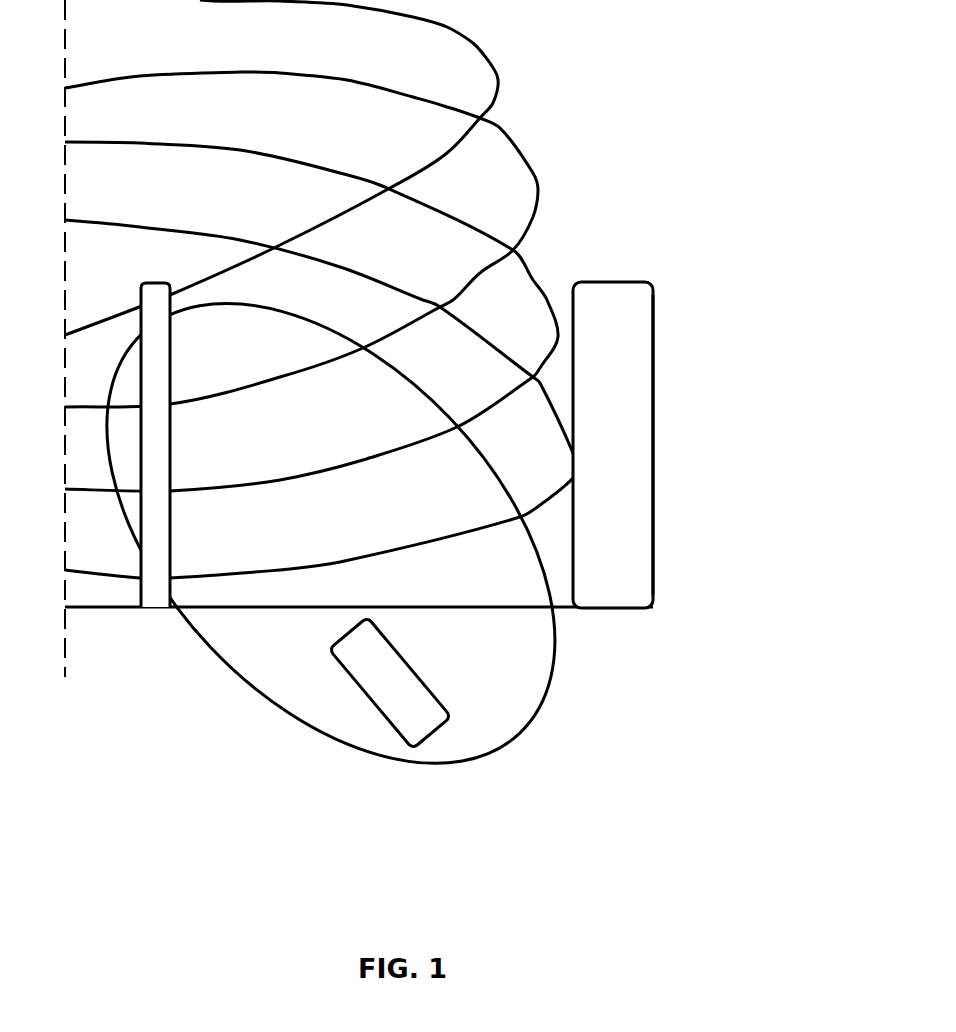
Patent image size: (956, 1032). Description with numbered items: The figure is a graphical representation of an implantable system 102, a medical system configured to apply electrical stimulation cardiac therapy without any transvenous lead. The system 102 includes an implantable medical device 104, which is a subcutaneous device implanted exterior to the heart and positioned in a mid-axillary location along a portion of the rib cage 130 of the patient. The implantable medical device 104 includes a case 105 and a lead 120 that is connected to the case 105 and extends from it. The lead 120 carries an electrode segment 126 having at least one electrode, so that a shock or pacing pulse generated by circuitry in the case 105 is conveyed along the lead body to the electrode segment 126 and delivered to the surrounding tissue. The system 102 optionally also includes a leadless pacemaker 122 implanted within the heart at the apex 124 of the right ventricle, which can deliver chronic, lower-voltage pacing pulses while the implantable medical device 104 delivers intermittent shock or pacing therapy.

The implantable system 102 is at (446, 423).
The implantable medical device 104 is at (668, 314).
The case 105 is at (653, 567).
The lead 120 is at (572, 617).
The leadless pacemaker 122 is at (395, 735).
The apex of the right ventricle 124 is at (503, 748).
The electrode segment 126 is at (140, 590).
The rib cage 130 is at (533, 138).